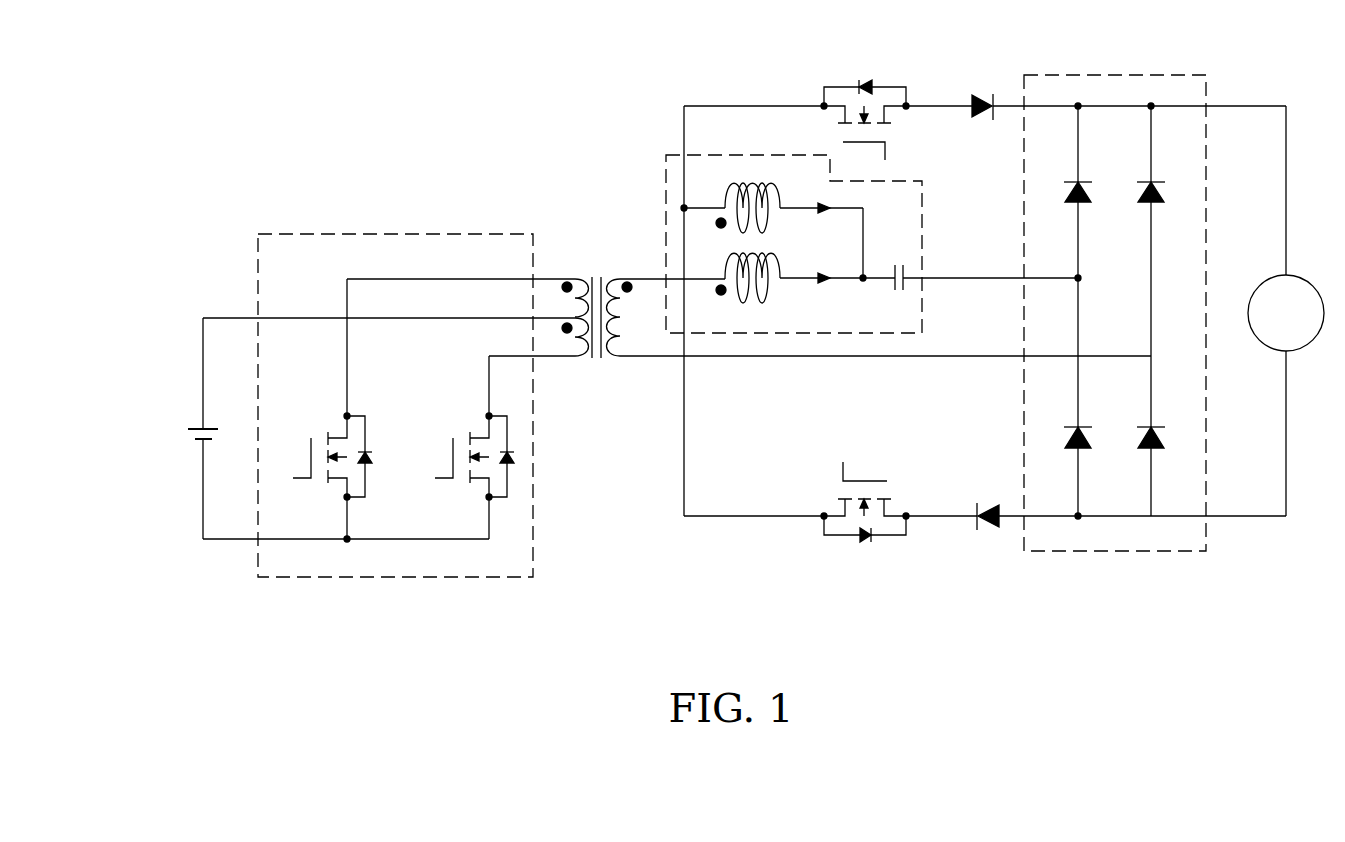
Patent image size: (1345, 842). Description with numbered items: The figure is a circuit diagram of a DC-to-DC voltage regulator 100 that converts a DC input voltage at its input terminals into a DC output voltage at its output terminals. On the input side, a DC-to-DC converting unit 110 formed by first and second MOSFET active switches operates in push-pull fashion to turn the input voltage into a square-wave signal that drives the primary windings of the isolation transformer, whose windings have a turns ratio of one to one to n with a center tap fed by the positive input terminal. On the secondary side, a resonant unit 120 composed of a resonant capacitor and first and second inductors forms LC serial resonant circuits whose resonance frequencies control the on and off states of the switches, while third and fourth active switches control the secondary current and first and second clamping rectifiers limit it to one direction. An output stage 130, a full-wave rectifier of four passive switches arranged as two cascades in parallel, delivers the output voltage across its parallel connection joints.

The DC-to-DC voltage regulator 100 is at (325, 73).
The DC-to-DC converting unit 110 is at (393, 233).
The resonant unit 120 is at (672, 153).
The output stage 130 is at (1112, 73).